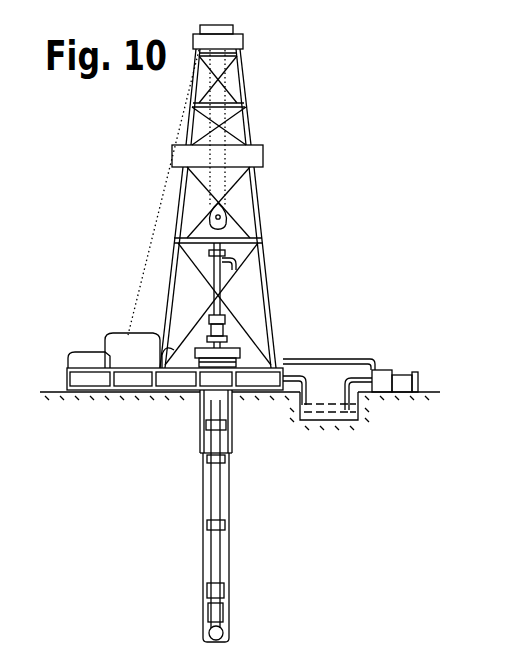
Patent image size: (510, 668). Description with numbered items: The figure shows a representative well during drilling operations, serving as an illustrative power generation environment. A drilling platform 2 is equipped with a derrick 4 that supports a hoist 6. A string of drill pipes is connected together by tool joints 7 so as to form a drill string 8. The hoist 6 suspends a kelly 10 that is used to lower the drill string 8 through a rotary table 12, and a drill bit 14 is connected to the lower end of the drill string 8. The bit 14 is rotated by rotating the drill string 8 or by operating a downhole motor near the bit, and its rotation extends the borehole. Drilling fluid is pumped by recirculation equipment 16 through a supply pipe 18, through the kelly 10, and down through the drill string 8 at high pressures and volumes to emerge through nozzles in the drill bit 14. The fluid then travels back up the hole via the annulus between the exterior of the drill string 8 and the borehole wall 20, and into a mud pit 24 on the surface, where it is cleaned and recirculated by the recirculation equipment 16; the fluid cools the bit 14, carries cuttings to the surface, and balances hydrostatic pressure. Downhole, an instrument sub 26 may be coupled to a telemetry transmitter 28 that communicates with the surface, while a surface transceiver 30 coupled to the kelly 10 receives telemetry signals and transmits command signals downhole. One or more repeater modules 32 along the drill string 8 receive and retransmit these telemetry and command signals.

The drilling platform 2 is at (68, 373).
The derrick 4 is at (250, 114).
The hoist 6 is at (228, 216).
The tool joints 7 is at (208, 466).
The drill string 8 is at (222, 488).
The kelly 10 is at (218, 270).
The rotary table 12 is at (230, 347).
The drill bit 14 is at (225, 632).
The recirculation equipment 16 is at (381, 370).
The supply pipe 18 is at (335, 362).
The borehole wall 20 is at (230, 495).
The mud pit 24 is at (303, 424).
The downhole instrument sub 26 is at (210, 610).
The telemetry transmitter 28 is at (208, 592).
The surface transceiver 30 is at (222, 312).
The repeater modules 32 is at (208, 514).